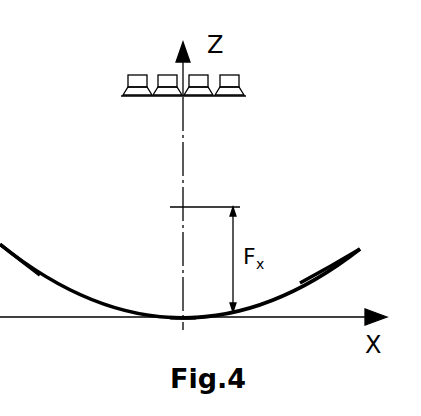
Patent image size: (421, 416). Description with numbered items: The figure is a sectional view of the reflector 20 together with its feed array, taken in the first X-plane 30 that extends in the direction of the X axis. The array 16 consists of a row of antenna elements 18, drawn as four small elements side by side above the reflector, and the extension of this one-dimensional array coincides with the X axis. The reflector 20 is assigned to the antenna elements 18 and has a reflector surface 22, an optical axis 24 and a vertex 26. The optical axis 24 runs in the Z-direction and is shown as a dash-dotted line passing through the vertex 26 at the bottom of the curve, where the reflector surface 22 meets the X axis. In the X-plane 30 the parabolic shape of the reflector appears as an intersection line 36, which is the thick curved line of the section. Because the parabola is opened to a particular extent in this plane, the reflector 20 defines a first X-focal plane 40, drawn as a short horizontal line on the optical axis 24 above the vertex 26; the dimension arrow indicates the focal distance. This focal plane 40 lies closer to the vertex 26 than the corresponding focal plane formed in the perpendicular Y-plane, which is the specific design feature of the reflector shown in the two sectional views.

The array of antenna elements 16 is at (209, 56).
The antenna element 18 is at (137, 83).
The reflector 20 is at (33, 274).
The reflector surface 22 is at (83, 297).
The optical axis 24 is at (183, 157).
The vertex 26 is at (181, 318).
The first (X-) plane 30 is at (325, 149).
The intersection line 36 is at (320, 275).
The first (X-) focal plane 40 is at (212, 207).